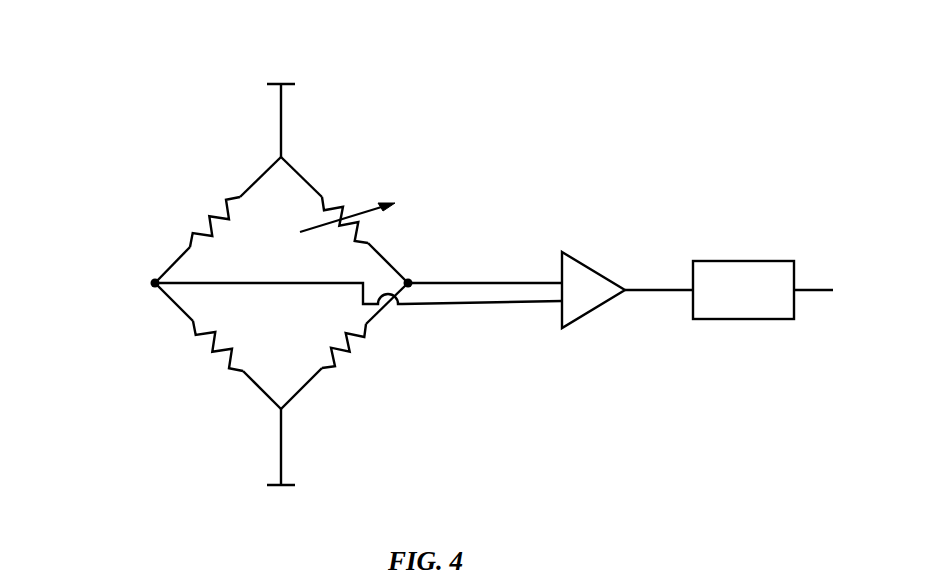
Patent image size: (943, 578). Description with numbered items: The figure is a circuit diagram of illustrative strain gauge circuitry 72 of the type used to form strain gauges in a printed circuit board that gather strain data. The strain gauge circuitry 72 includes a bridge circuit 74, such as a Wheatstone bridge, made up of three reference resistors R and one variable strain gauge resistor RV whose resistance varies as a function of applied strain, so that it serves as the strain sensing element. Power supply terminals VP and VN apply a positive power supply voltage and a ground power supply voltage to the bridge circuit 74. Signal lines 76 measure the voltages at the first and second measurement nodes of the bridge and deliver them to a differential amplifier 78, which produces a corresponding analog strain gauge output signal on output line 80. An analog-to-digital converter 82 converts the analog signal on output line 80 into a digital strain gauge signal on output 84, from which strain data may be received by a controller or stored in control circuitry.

The strain gauge circuitry 72 is at (92, 82).
The bridge circuit 74 is at (196, 386).
The signal lines 76 is at (498, 282).
The differential amplifier 78 is at (593, 270).
The output line 80 is at (648, 292).
The analog-to-digital converter 82 is at (743, 260).
The output 84 is at (818, 287).